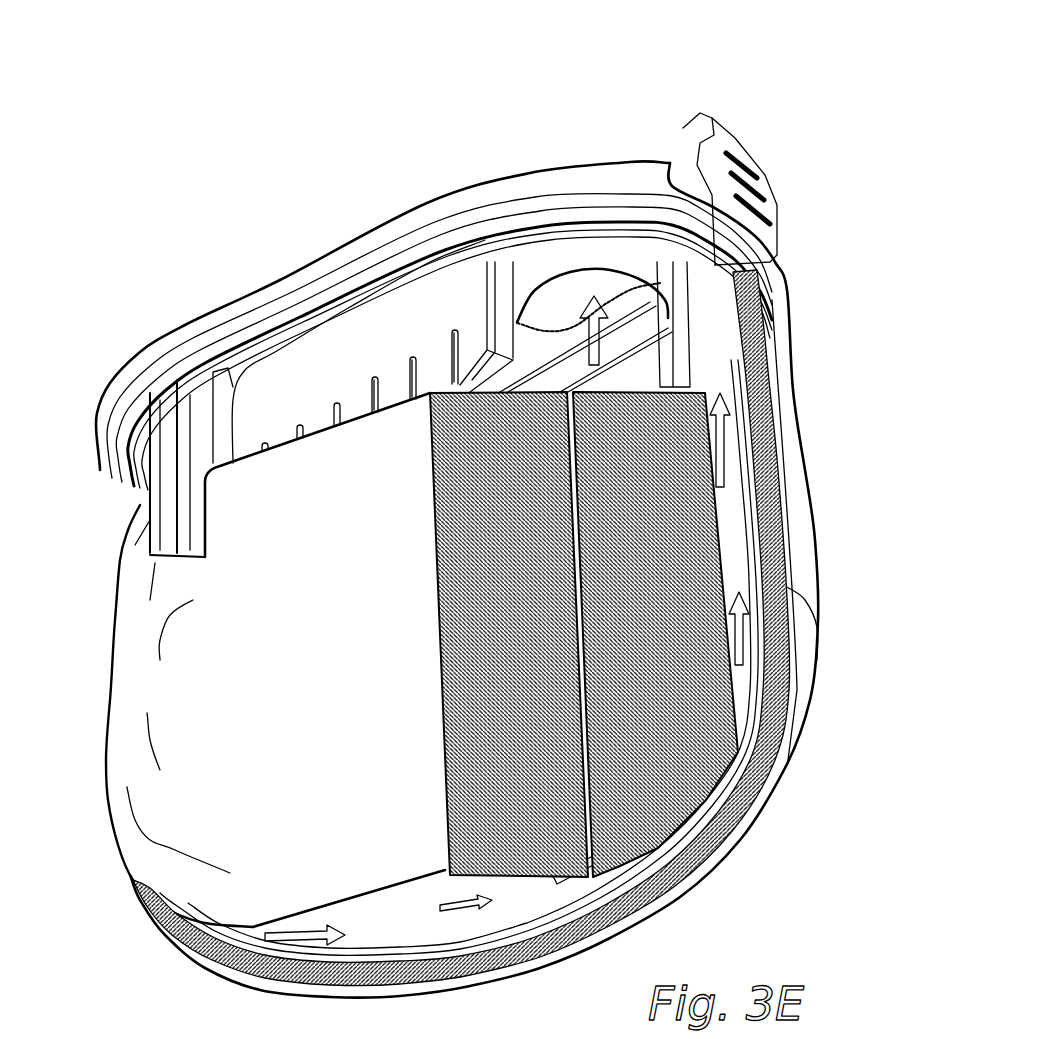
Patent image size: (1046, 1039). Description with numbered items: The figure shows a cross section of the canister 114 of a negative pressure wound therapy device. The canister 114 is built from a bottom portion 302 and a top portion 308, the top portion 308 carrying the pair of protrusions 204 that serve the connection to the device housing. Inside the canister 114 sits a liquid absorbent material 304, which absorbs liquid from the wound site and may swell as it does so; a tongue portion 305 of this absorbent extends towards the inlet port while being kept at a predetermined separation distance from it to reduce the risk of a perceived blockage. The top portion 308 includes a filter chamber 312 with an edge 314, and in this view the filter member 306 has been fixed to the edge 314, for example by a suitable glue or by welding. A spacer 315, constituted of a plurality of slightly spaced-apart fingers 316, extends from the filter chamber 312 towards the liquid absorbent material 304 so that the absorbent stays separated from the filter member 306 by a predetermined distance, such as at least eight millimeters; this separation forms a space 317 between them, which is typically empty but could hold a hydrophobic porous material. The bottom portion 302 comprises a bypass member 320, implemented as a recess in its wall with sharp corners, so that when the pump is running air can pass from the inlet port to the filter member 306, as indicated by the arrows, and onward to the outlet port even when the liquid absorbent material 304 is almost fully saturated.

The canister 114 is at (808, 96).
The protrusions 204 is at (710, 153).
The bottom portion 302 is at (800, 438).
The liquid absorbent material 304 is at (185, 720).
The tongue portion 305 is at (147, 523).
The filter member 306 is at (540, 364).
The top portion 308 is at (170, 357).
The filter chamber 312 is at (566, 318).
The edge 314 is at (610, 282).
The spacer 315 is at (423, 290).
The fingers 316 is at (433, 367).
The space 317 is at (640, 336).
The bypass member 320 is at (777, 652).